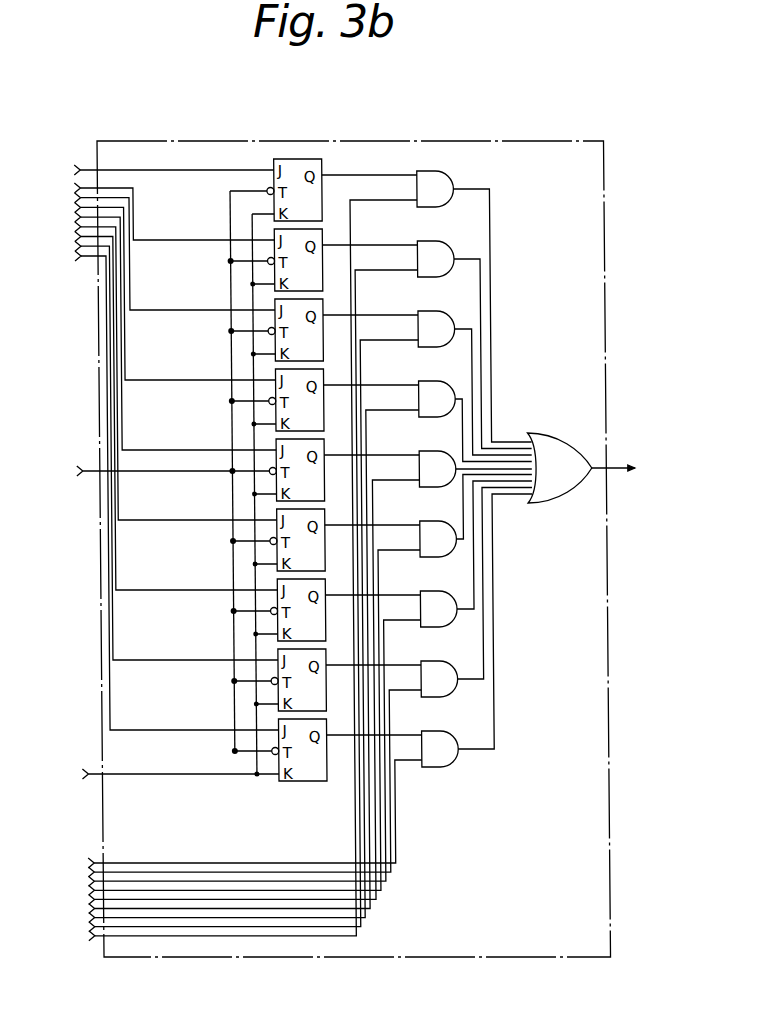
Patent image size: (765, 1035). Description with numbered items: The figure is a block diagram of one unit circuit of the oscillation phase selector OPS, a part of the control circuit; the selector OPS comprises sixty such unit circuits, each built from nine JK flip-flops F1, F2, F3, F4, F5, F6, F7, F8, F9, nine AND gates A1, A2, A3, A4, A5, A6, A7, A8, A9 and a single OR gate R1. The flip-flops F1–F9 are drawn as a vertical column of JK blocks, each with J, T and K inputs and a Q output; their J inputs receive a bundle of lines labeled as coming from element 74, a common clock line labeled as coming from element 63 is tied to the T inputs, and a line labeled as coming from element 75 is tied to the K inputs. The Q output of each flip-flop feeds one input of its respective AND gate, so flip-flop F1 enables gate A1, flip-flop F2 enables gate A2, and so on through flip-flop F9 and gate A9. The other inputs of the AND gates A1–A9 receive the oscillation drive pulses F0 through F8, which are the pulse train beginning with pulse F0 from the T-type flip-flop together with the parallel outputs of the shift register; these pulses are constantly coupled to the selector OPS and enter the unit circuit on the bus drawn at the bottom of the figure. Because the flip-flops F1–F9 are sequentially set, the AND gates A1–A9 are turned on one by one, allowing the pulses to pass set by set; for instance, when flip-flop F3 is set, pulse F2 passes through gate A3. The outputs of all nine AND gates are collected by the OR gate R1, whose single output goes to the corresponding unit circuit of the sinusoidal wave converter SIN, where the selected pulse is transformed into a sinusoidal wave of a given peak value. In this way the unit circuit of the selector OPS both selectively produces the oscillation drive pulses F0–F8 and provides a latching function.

The oscillation phase selector OPS is at (388, 100).
The input lines from element 74 is at (164, 446).
The clock pulse input from element 63 is at (161, 472).
The input line from element 75 is at (170, 516).
The JK flip-flop F1 is at (328, 223).
The JK flip-flop F2 is at (328, 293).
The JK flip-flop F3 is at (328, 363).
The JK flip-flop F4 is at (328, 433).
The JK flip-flop F5 is at (328, 503).
The JK flip-flop F6 is at (328, 573).
The JK flip-flop F7 is at (328, 643).
The JK flip-flop F8 is at (328, 713).
The JK flip-flop F9 is at (321, 781).
The output pulse F0 is at (72, 918).
The AND gate A1 is at (446, 173).
The AND gate A2 is at (444, 243).
The AND gate A3 is at (441, 313).
The AND gate A4 is at (438, 383).
The AND gate A5 is at (436, 453).
The AND gate A6 is at (434, 523).
The AND gate A7 is at (431, 593).
The AND gate A8 is at (428, 663).
The AND gate A9 is at (426, 733).
The OR gate R1 is at (556, 434).